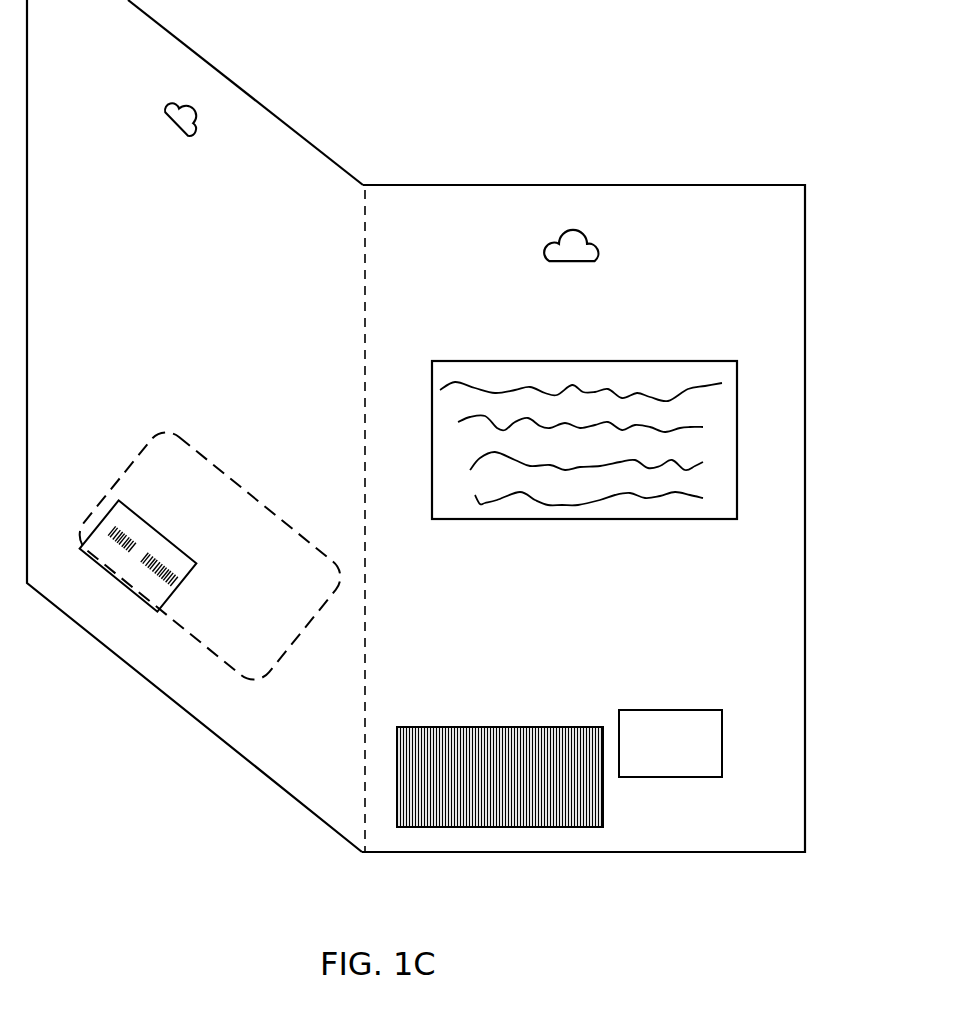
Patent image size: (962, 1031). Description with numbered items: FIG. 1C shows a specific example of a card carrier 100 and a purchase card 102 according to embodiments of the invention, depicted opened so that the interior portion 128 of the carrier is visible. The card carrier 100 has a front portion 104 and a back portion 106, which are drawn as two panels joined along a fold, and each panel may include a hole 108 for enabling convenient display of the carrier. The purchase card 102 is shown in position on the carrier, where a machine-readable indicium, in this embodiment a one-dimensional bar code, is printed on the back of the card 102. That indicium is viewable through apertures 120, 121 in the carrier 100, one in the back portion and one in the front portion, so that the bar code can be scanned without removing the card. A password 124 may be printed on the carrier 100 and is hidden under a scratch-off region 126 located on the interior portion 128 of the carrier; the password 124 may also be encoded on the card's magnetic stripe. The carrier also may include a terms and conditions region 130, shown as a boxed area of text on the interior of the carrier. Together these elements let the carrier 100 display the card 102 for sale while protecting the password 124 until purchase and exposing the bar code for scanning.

The card carrier 100 is at (416, 426).
The purchase card 102 is at (162, 425).
The front portion 104 is at (320, 242).
The back portion 106 is at (777, 240).
The hole 108 is at (553, 262).
The aperture 120 is at (653, 710).
The aperture 121 is at (129, 555).
The password 124 is at (453, 782).
The scratch-off region 126 is at (466, 784).
The interior portion 128 is at (792, 836).
The terms and conditions region 130 is at (737, 436).